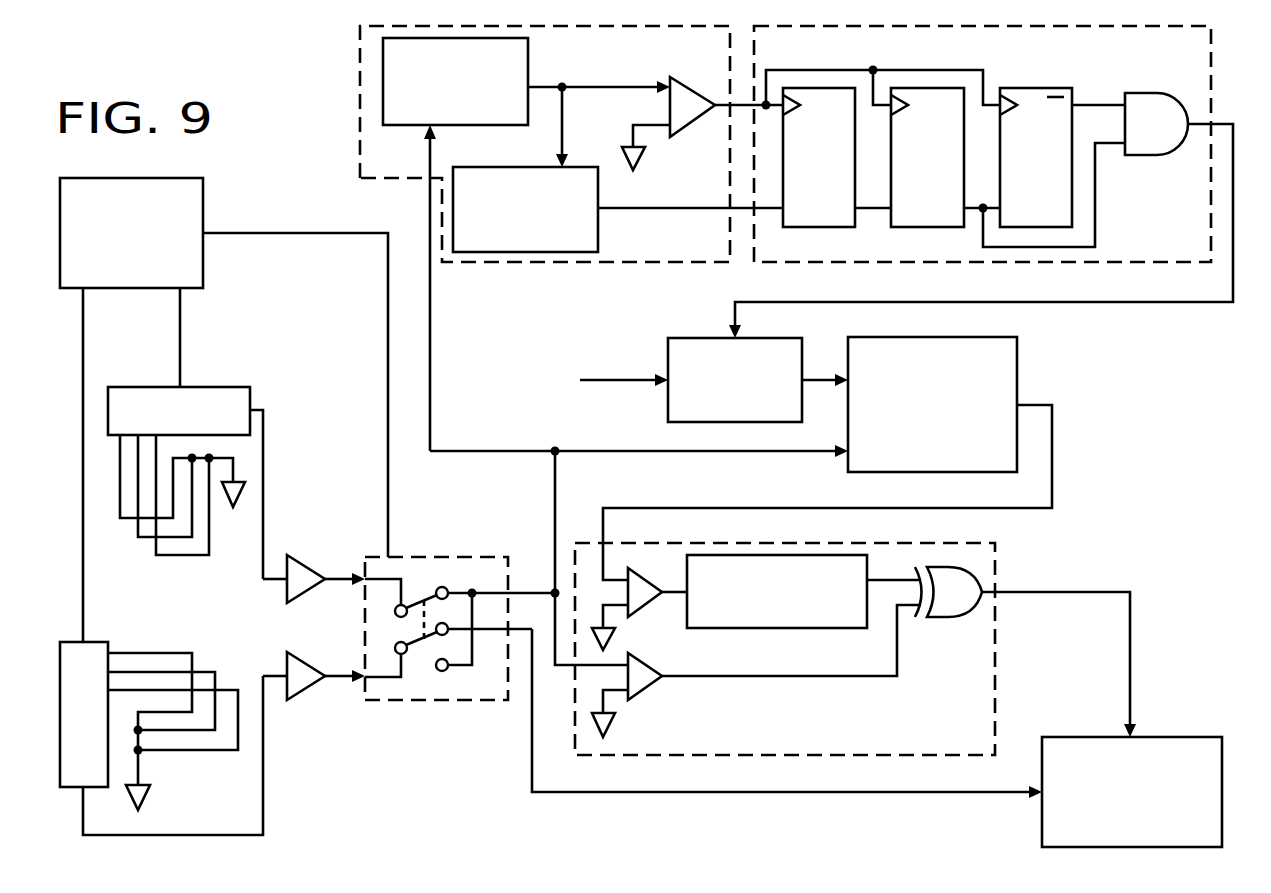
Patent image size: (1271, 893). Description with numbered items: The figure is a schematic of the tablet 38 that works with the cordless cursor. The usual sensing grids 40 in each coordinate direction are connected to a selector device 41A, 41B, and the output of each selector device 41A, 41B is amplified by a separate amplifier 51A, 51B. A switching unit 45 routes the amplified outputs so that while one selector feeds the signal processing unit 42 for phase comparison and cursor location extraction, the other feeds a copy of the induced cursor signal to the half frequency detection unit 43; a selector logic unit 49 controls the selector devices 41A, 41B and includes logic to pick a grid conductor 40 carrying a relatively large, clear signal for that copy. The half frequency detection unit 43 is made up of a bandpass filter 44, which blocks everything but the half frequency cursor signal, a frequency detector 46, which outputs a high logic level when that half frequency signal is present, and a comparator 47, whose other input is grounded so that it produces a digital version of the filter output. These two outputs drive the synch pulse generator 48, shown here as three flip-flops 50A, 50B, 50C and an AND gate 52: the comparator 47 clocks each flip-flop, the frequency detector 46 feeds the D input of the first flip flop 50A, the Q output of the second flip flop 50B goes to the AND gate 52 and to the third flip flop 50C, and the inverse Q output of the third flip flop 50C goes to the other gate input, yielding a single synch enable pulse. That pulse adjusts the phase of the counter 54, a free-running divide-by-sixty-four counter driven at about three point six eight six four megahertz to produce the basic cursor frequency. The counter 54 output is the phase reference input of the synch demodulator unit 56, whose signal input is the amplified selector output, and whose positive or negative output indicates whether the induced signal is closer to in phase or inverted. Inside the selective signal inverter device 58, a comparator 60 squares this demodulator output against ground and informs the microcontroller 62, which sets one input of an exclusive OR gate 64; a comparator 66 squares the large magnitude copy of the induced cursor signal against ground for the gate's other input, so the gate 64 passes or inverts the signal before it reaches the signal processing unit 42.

The tablet 38 is at (1098, 451).
The sensing grids 40 is at (180, 557).
The selector device 41A is at (225, 387).
The selector device 41B is at (108, 642).
The signal processing unit 42 is at (1192, 737).
The half frequency detection unit 43 is at (360, 133).
The bandpass filter 44 is at (528, 57).
The switching unit 45 is at (438, 700).
The frequency detector 46 is at (598, 240).
The comparator 47 is at (690, 125).
The synch pulse generator 48 is at (1153, 263).
The selector logic unit 49 is at (203, 180).
The first flip flop 50A is at (837, 157).
The second flip flop 50B is at (1008, 167).
The third flip flop 50C is at (1062, 157).
The amplifier 51A is at (290, 557).
The amplifier 51B is at (293, 700).
The AND gate 52 is at (1143, 155).
The counter 54 is at (668, 338).
The synch demodulator unit 56 is at (1017, 337).
The selective signal inverter device 58 is at (993, 545).
The comparator 60 is at (645, 605).
The microcontroller 62 is at (735, 628).
The exclusive OR gate 64 is at (955, 617).
The comparator 66 is at (645, 690).